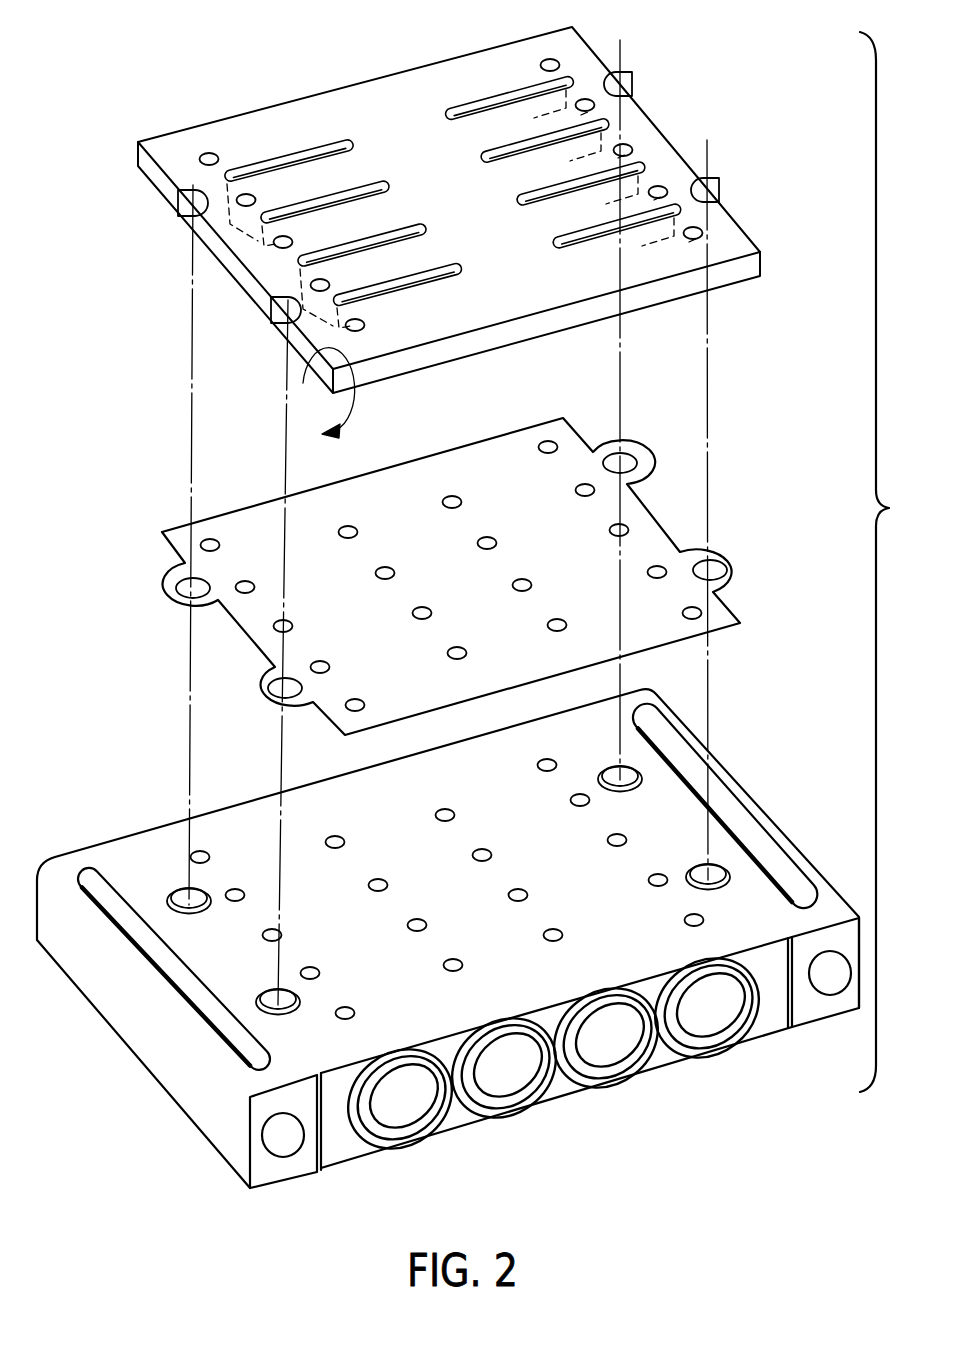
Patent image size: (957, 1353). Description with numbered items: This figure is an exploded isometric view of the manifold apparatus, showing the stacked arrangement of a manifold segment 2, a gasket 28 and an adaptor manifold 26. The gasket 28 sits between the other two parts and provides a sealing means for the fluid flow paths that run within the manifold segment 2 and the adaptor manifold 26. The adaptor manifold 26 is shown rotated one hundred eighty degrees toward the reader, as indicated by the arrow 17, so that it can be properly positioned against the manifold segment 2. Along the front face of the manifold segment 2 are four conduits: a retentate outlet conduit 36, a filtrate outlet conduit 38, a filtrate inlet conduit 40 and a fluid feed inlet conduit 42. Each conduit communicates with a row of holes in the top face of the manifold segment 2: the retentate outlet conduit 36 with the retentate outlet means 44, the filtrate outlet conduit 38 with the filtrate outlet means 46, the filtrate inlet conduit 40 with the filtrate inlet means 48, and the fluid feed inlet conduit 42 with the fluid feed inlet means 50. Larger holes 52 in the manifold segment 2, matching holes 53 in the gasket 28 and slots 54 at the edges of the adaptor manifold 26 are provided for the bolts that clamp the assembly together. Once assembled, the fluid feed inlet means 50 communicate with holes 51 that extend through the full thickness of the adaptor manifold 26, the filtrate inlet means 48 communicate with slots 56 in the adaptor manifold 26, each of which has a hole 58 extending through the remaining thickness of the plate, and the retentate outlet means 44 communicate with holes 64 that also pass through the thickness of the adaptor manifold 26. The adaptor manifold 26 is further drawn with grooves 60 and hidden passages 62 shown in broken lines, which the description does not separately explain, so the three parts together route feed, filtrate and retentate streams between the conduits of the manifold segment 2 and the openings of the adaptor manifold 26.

The manifold segment 2 is at (757, 799).
The arrow 17 is at (354, 416).
The adaptor manifold 26 is at (290, 100).
The gasket 28 is at (507, 434).
The retentate outlet conduit 36 is at (403, 1113).
The filtrate outlet conduit 38 is at (508, 1086).
The filtrate inlet conduit 40 is at (612, 1058).
The fluid feed inlet conduit 42 is at (710, 1027).
The retentate outlet means 44 is at (271, 929).
The filtrate outlet means 46 is at (457, 647).
The filtrate inlet means 48 is at (556, 619).
The fluid feed inlet means 50 is at (615, 834).
The holes 51 is at (585, 99).
The holes 52 is at (272, 990).
The holes 53 is at (178, 592).
The slots 54 is at (178, 204).
The slots 56 is at (553, 248).
The holes 58 is at (546, 119).
The grooves 60 is at (427, 224).
The passages 62 is at (268, 282).
The holes 64 is at (283, 236).